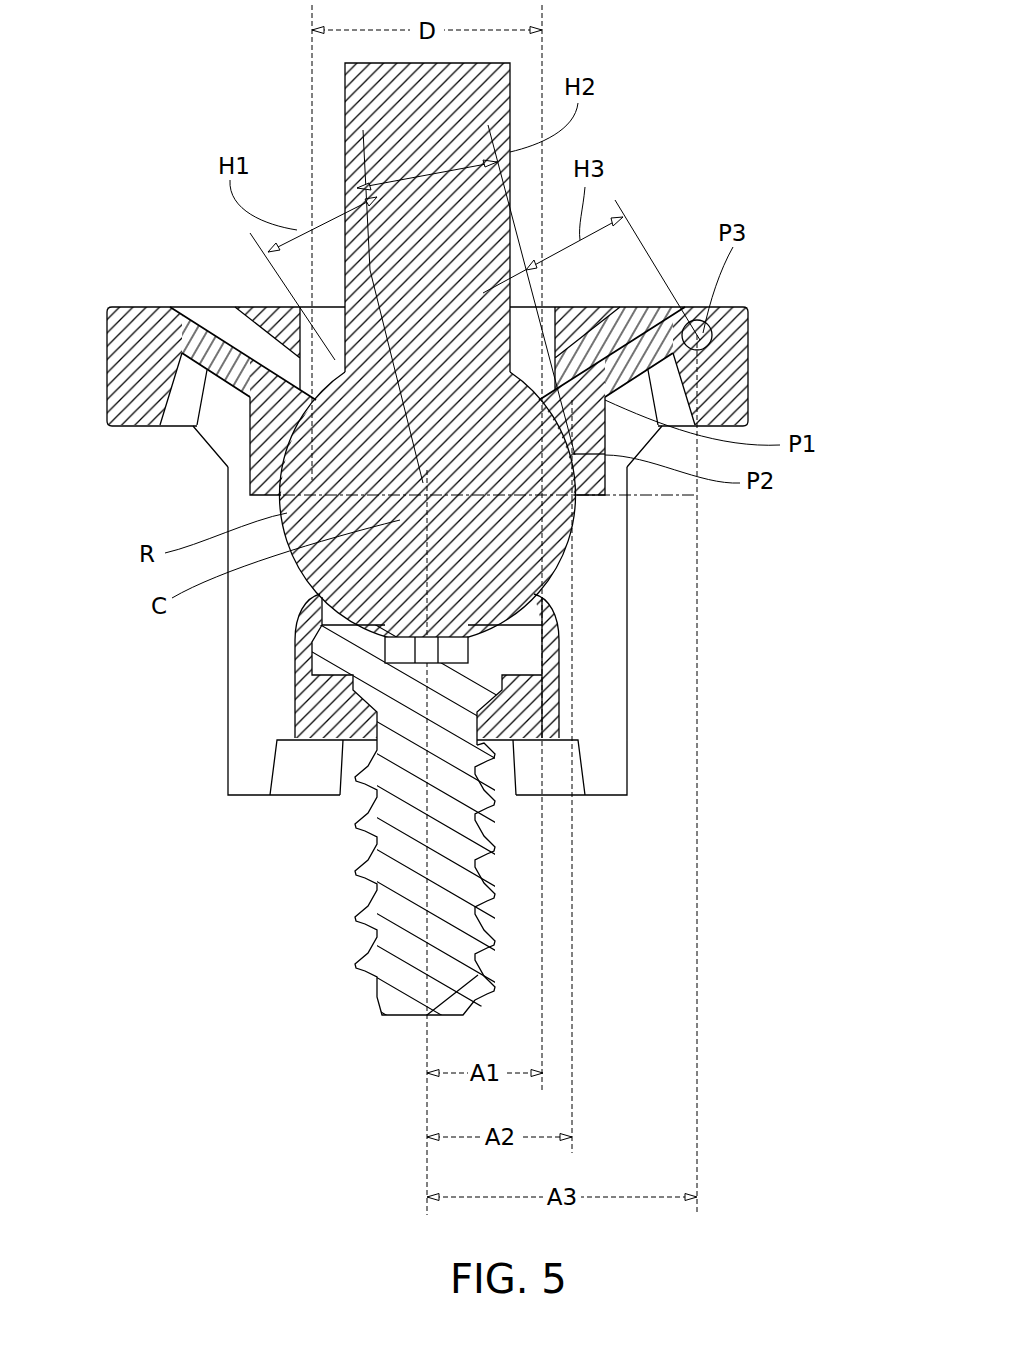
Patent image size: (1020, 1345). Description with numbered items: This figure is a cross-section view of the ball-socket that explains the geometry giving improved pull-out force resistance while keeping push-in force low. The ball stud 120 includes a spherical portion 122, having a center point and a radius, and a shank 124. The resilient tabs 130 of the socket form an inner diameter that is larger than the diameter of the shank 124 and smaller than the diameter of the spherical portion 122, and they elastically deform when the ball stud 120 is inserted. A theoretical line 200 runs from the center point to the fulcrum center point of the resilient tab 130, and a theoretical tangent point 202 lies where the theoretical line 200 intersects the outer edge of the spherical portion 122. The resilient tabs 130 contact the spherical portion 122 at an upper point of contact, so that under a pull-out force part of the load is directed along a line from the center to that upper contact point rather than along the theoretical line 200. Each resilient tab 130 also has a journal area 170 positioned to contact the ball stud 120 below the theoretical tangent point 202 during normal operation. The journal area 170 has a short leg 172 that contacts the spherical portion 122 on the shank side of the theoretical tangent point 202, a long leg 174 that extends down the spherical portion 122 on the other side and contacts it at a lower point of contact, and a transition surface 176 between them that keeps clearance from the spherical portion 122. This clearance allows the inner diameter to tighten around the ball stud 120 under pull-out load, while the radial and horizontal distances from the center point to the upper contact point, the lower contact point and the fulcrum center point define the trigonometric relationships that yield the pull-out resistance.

The ball stud 120 is at (347, 93).
The spherical portion 122 is at (540, 537).
The shank 124 is at (400, 143).
The resilient tabs 130 is at (210, 327).
The journal area 170 is at (257, 442).
The short leg 172 is at (290, 370).
The long leg 174 is at (253, 508).
The transition surface 176 is at (290, 427).
The theoretical line 200 is at (685, 330).
The theoretical tangent point 202 is at (605, 500).